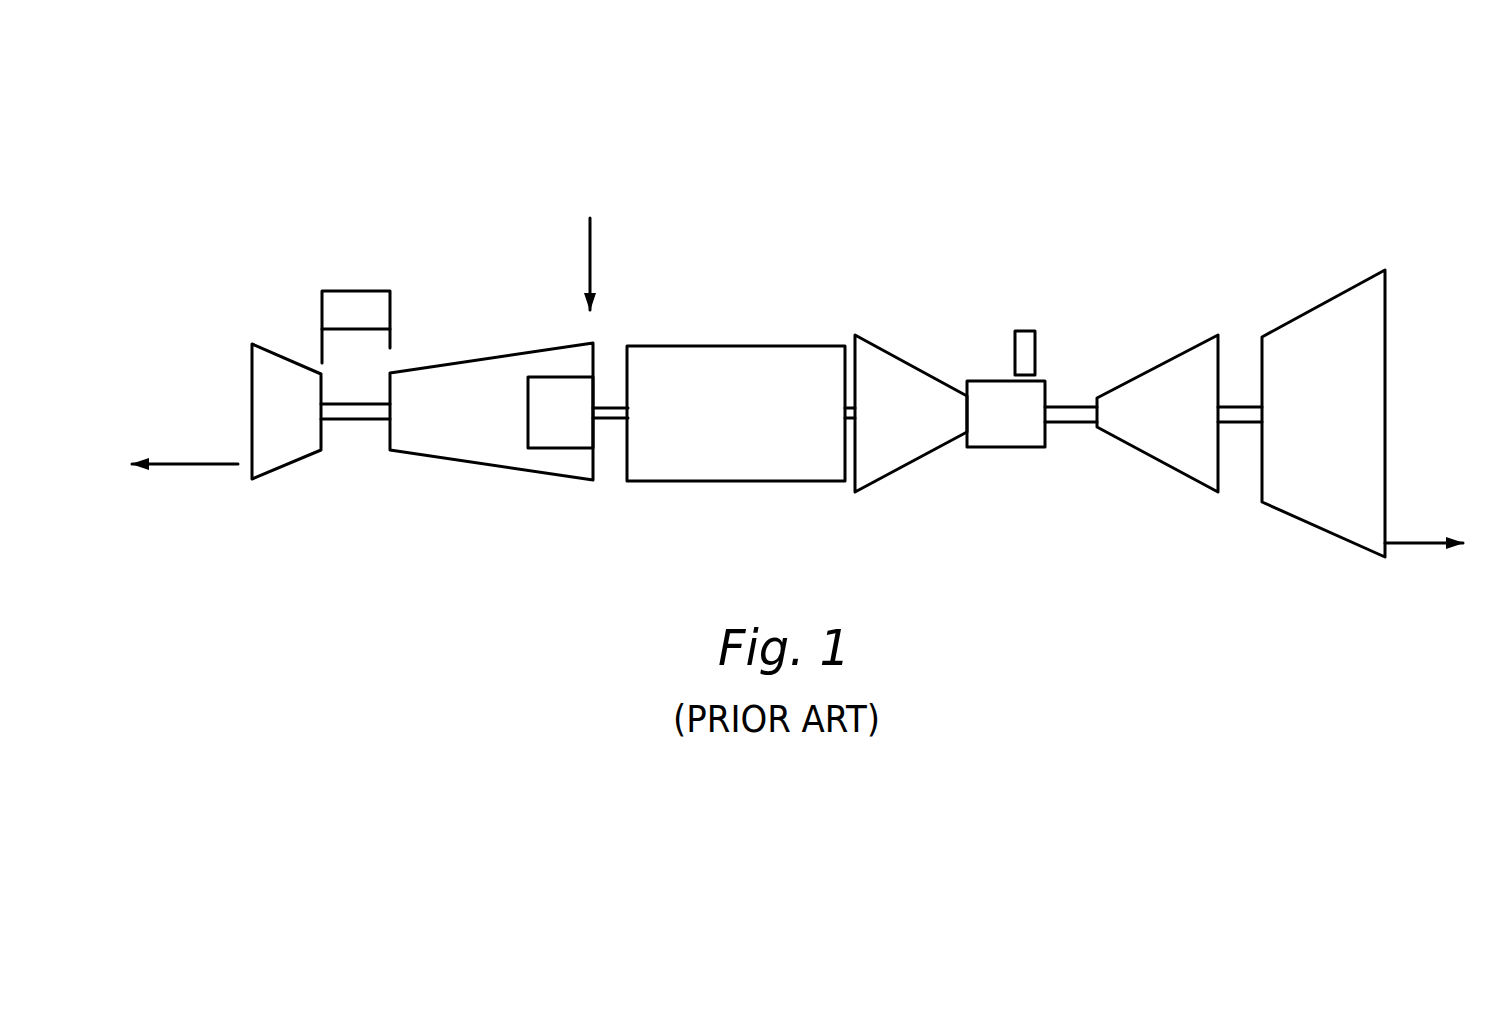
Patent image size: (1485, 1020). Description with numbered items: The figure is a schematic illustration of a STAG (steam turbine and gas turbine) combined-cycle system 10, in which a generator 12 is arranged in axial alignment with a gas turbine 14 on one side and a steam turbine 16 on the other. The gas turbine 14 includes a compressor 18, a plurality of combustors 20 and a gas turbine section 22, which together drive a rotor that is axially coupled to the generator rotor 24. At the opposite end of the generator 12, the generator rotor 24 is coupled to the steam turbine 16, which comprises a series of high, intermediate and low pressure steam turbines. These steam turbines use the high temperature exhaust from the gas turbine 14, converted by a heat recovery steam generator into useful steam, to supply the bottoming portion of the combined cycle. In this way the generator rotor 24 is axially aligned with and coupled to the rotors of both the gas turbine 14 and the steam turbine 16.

The STAG combined-cycle system 10 is at (817, 205).
The generator 12 is at (742, 457).
The gas turbine 14 is at (430, 237).
The steam turbine 16 is at (1073, 495).
The compressor 18 is at (289, 463).
The combustors 20 is at (347, 297).
The gas turbine section 22 is at (460, 442).
The generator rotor 24 is at (613, 420).